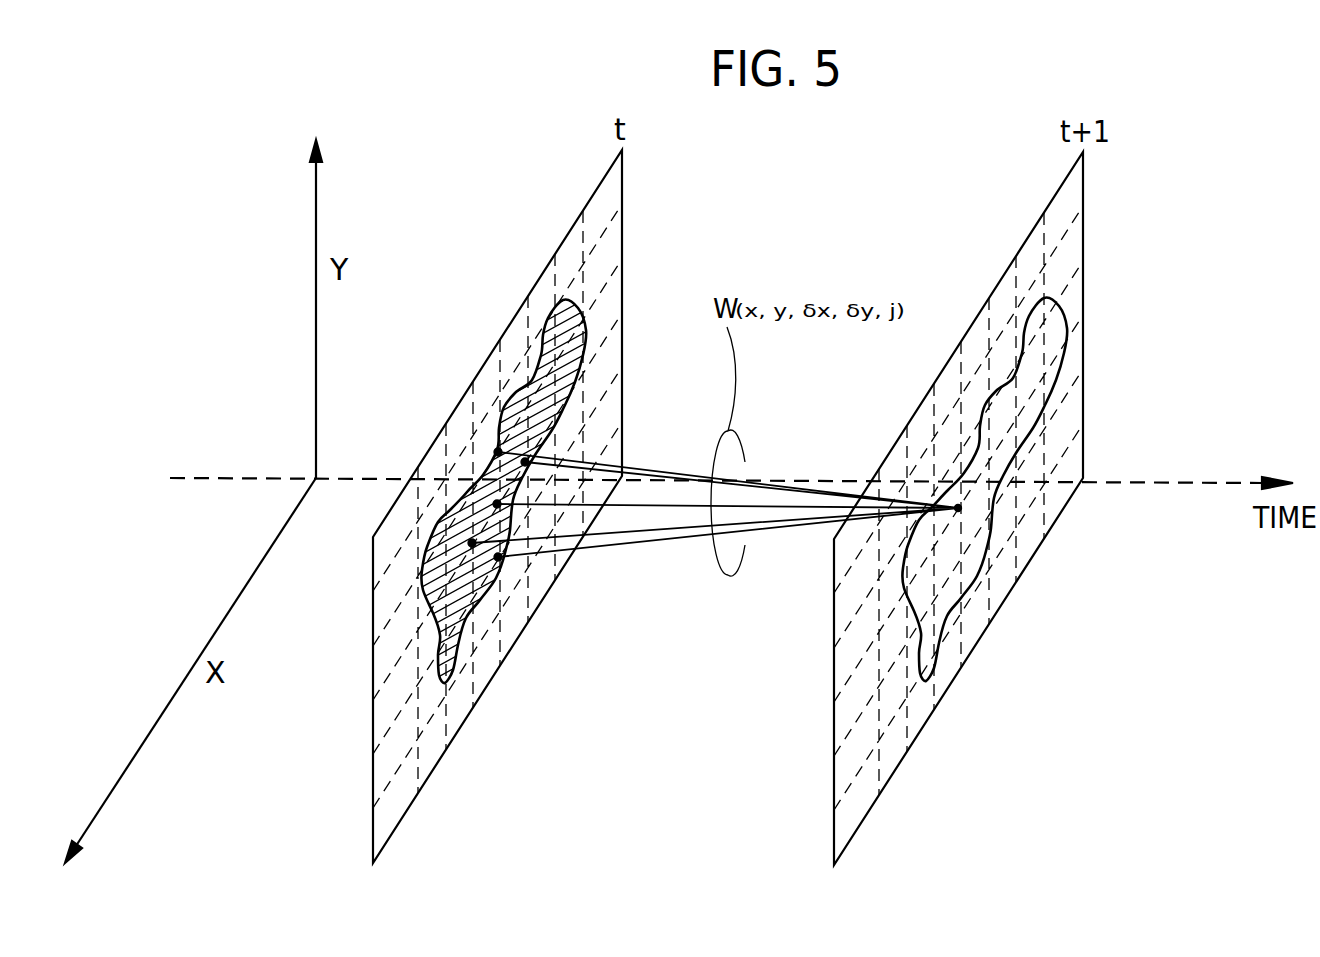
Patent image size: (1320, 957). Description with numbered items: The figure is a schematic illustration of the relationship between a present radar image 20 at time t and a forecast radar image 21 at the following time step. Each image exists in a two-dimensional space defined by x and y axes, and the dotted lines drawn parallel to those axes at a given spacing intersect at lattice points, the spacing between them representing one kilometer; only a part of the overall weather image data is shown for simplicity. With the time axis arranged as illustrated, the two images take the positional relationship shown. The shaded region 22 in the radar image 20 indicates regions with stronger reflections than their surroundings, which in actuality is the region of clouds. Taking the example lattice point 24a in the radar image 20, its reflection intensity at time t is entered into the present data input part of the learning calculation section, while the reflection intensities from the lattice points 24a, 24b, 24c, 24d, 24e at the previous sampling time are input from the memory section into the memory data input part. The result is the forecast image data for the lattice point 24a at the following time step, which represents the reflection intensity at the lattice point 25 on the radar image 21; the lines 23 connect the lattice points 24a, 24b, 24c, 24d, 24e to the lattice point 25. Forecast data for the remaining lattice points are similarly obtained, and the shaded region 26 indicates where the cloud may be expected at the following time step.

The present radar image 20 is at (622, 221).
The forecast radar image 21 is at (1083, 190).
The shaded region 22 is at (547, 342).
The candidate correspondence lines 23 is at (955, 510).
The lattice point 24a is at (496, 500).
The lattice point 24b is at (470, 544).
The lattice point 24c is at (528, 460).
The lattice point 24d is at (497, 448).
The lattice point 24e is at (498, 558).
The lattice point 25 is at (960, 508).
The shaded region 26 is at (1058, 368).